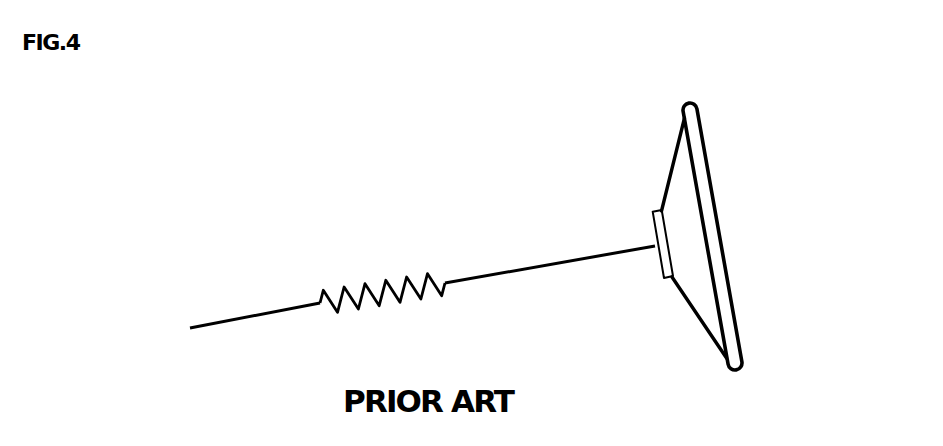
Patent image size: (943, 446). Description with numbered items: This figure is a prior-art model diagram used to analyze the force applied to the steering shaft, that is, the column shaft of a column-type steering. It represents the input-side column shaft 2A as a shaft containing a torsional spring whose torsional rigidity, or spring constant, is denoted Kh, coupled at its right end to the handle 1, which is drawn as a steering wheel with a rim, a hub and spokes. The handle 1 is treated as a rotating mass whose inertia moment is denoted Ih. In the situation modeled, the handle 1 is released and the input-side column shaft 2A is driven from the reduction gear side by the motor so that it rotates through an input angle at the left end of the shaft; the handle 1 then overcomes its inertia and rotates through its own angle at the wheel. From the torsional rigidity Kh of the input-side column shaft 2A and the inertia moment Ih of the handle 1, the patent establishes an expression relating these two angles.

The handle 1 is at (712, 236).
The input-side column shaft 2A is at (421, 272).
The inertia moment of the handle Ih is at (714, 236).
The torsional rigidity (spring constant) of the input-side column shaft Kh is at (382, 283).